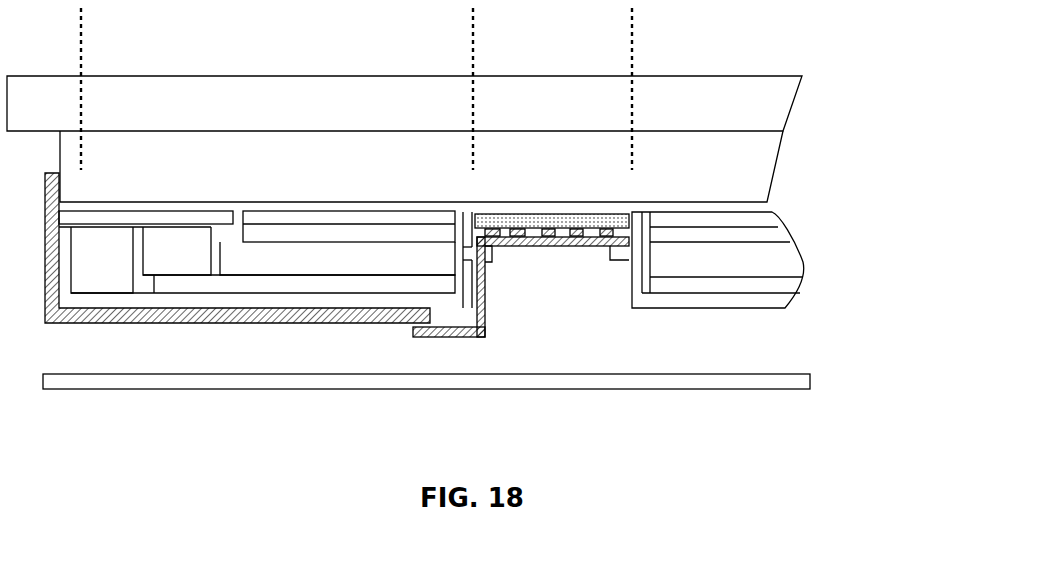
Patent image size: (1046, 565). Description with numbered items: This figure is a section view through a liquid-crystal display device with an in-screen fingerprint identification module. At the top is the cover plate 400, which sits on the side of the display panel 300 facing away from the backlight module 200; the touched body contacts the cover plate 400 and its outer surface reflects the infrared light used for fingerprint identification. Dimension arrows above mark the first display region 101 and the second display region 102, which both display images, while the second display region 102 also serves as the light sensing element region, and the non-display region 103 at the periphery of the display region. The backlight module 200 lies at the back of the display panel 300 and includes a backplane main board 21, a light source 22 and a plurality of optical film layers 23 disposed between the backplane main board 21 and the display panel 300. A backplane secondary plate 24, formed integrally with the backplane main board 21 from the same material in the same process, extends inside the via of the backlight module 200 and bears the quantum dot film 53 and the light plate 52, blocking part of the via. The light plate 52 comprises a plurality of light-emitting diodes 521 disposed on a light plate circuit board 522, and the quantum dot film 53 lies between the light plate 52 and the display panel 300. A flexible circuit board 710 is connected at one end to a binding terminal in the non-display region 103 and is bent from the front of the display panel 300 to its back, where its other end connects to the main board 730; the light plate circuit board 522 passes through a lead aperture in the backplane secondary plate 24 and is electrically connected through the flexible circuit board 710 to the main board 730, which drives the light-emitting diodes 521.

The first display region 101 is at (473, 36).
The second display region 102 is at (632, 47).
The non-display region 103 is at (81, 50).
The cover plate 400 is at (798, 97).
The display panel 300 is at (775, 167).
The backlight module 200 is at (802, 213).
The flexible circuit board 710 is at (70, 322).
The backplane main board 21 is at (118, 295).
The light source 22 is at (178, 262).
The optical film layers 23 is at (248, 265).
The backplane secondary plate 24 is at (493, 257).
The main board 730 is at (195, 382).
The light plate 52 is at (549, 301).
The light-emitting diodes 521 is at (550, 237).
The light plate circuit board 522 is at (587, 237).
The quantum dot film 53 is at (630, 240).